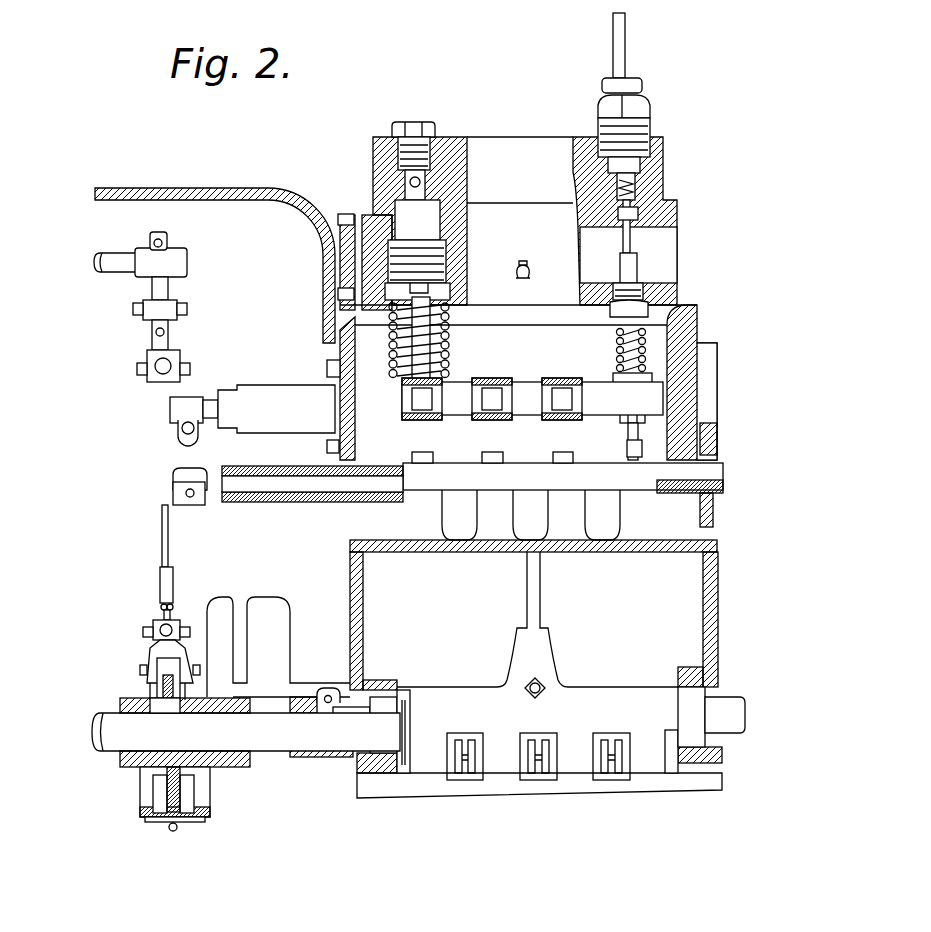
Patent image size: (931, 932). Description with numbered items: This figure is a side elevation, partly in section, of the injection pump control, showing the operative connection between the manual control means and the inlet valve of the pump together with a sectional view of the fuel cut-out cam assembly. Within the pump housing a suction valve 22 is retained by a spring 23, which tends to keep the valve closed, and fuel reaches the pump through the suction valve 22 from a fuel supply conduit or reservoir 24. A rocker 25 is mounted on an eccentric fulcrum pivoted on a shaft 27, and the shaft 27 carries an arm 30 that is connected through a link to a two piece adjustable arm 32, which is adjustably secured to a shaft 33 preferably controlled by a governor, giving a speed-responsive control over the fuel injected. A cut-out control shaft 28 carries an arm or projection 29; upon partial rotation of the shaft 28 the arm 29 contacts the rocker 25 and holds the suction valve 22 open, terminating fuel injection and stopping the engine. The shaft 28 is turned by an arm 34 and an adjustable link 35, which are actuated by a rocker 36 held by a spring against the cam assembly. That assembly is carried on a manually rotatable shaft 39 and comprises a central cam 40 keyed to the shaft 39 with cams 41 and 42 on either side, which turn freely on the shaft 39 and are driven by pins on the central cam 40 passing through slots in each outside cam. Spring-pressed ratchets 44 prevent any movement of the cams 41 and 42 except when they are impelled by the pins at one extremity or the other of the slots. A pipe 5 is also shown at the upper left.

The pipe 5 is at (282, 192).
The suction valve 22 is at (665, 185).
The spring 23 is at (643, 173).
The fuel supply conduit or reservoir 24 is at (653, 262).
The rocker 25 is at (628, 433).
The shaft 27 is at (527, 390).
The cut-out control shaft 28 is at (523, 475).
The arm or projection 29 is at (633, 460).
The arm 30 is at (180, 388).
The two piece adjustable arm 32 is at (168, 298).
The shaft 33 is at (113, 260).
The arm 34 is at (200, 507).
The adjustable link 35 is at (163, 552).
The rocker 36 is at (148, 653).
The manually rotatable shaft 39 is at (103, 733).
The central cam 40 is at (168, 713).
The cam 41 is at (160, 690).
The cam 42 is at (180, 683).
The ratchets 44 is at (157, 787).